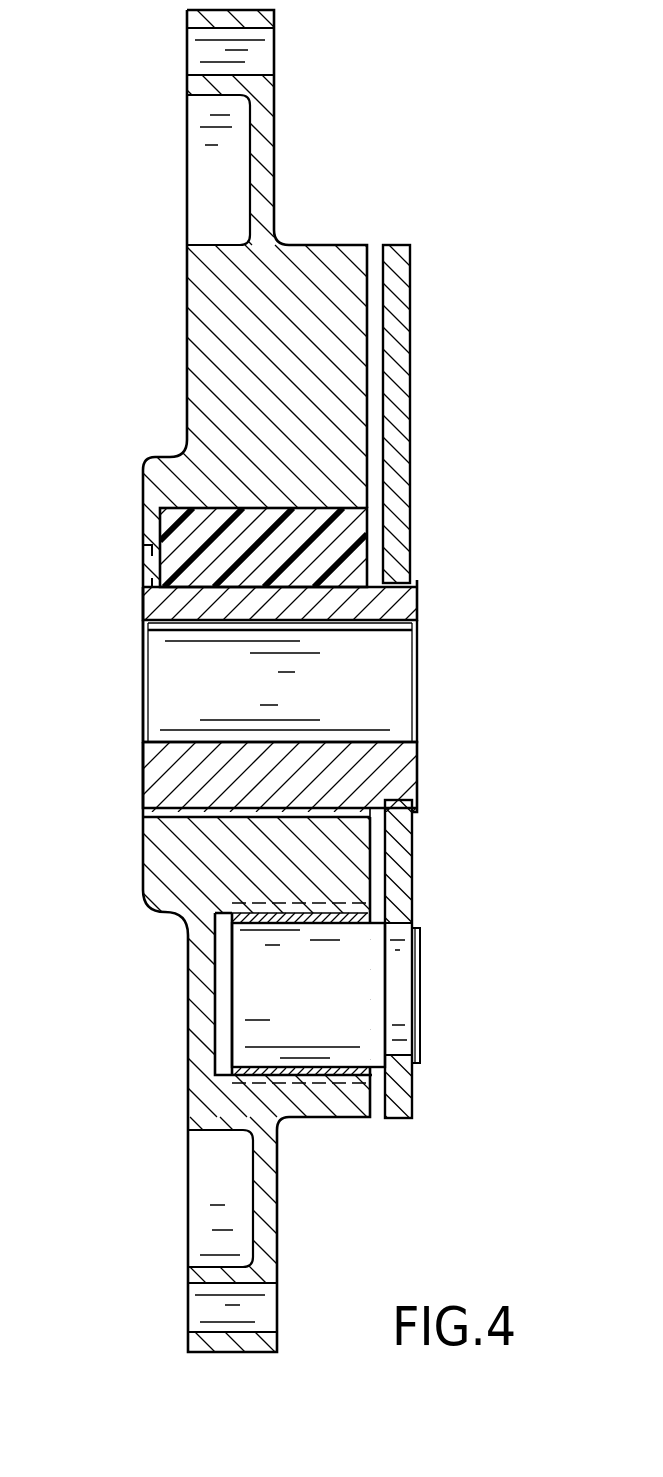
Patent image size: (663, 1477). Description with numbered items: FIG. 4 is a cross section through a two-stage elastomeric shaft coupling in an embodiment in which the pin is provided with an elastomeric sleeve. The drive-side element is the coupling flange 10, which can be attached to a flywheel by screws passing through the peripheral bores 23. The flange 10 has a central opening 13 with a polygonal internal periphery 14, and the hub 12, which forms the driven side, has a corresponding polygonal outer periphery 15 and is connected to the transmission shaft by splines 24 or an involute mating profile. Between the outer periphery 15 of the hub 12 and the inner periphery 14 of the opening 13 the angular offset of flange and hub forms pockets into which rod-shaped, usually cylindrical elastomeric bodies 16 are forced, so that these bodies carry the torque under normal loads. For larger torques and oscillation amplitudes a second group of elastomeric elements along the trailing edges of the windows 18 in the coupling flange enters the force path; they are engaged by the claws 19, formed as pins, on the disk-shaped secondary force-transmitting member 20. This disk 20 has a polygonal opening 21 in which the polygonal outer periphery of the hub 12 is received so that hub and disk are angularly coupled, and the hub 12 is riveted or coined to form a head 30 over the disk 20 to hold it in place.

The coupling flange 10 is at (265, 158).
The hub 12 is at (162, 767).
The central opening 13 is at (150, 817).
The polygonal internal periphery 14 is at (143, 550).
The polygonal outer periphery of the hub 15 is at (143, 580).
The elastomeric bodies 16 is at (348, 542).
The windows 18 is at (218, 972).
The claws 19 is at (332, 970).
The secondary force-transmitting disk 20 is at (402, 877).
The polygonal opening 21 is at (392, 800).
The peripheral bores 23 is at (262, 43).
The splines 24 is at (386, 632).
The head 30 is at (418, 578).